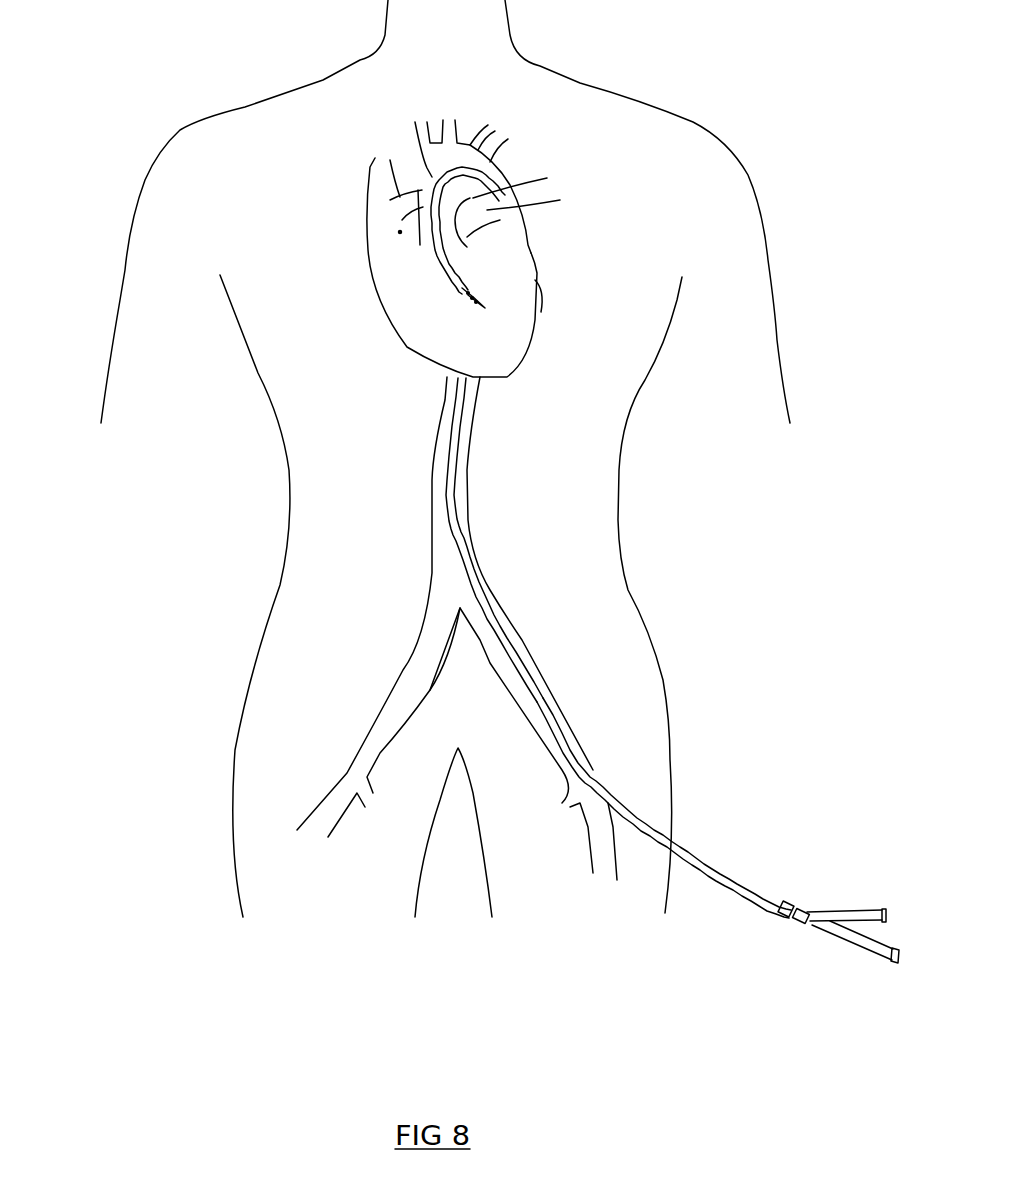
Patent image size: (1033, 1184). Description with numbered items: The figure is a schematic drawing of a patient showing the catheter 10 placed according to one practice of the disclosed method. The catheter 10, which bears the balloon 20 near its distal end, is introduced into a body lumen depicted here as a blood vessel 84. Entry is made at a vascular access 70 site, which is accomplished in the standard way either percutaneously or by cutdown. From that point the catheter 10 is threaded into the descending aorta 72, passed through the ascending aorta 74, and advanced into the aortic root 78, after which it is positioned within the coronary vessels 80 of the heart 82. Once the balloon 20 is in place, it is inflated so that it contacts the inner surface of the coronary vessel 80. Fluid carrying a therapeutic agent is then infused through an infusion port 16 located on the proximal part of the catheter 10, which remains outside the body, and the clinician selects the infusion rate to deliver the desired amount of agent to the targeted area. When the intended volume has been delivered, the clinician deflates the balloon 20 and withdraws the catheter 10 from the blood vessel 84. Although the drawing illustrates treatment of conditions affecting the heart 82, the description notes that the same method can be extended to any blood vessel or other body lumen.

The catheter 10 is at (720, 875).
The infusion port 16 is at (857, 907).
The balloon 20 is at (460, 300).
The vascular access 70 is at (628, 807).
The descending aorta 72 is at (440, 510).
The ascending aorta 74 is at (436, 173).
The aortic root 78 is at (420, 245).
The coronary vessels 80 is at (463, 274).
The heart 82 is at (462, 335).
The blood vessel 84 is at (513, 628).